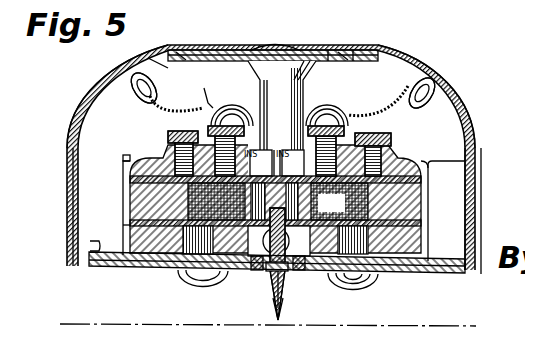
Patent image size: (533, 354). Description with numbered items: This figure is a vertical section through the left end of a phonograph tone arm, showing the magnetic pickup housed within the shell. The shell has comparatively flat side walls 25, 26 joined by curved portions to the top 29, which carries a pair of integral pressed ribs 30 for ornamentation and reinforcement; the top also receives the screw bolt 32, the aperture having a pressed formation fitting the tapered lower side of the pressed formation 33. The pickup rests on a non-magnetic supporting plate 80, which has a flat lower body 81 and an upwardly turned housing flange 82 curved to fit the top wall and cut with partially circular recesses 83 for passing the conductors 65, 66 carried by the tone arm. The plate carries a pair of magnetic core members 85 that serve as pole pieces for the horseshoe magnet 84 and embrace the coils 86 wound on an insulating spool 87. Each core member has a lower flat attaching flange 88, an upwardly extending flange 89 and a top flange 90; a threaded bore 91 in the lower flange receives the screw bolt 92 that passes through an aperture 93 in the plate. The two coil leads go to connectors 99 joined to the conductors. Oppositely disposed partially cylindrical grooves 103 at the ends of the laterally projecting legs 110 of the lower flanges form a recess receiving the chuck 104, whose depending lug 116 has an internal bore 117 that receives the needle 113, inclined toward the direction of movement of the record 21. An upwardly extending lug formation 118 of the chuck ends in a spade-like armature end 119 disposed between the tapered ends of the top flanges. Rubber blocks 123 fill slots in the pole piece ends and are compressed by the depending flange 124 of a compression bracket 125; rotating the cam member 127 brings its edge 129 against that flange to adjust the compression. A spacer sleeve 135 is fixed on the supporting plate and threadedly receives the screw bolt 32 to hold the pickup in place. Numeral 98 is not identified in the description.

The record 21 is at (52, 314).
The side wall 25 is at (462, 164).
The side wall 26 is at (72, 170).
The top 29 is at (330, 42).
The pressed ribs 30 is at (166, 40).
The screw bolt 32 is at (265, 37).
The pressed formation 33 is at (240, 46).
The conductor 65 is at (422, 66).
The conductor 66 is at (122, 103).
The supporting plate 80 is at (84, 237).
The lower body 81 is at (457, 268).
The housing flange 82 is at (150, 60).
The partially circular recesses 83 is at (108, 76).
The horseshoe magnet 84 is at (116, 217).
The magnetic core members 85 is at (116, 260).
The coils 86 is at (395, 215).
The spool 87 is at (426, 234).
The lower flat attaching flange 88 is at (378, 246).
The upwardly extending flange 89 is at (123, 193).
The top flange 90 is at (352, 141).
The threaded bore 91 is at (366, 287).
The screw bolt 92 is at (172, 275).
The aperture 93 is at (303, 264).
The spring 98 is at (157, 121).
The connectors 99 is at (226, 96).
The partially cylindrical groove 103 is at (252, 258).
The chuck 104 is at (279, 272).
The laterally projecting legs 110 is at (158, 258).
The needle 113 is at (268, 305).
The depending lug 116 is at (256, 266).
The internal bore 117 is at (275, 302).
The upwardly extending lug formation 118 is at (408, 178).
The spade-like end 119 is at (338, 52).
The rubber blocks 123 is at (172, 46).
The depending flange 124 is at (130, 150).
The compression bracket 125 is at (215, 97).
The cam member 127 is at (196, 80).
The edge 129 is at (160, 134).
The spacer sleeve 135 is at (293, 46).